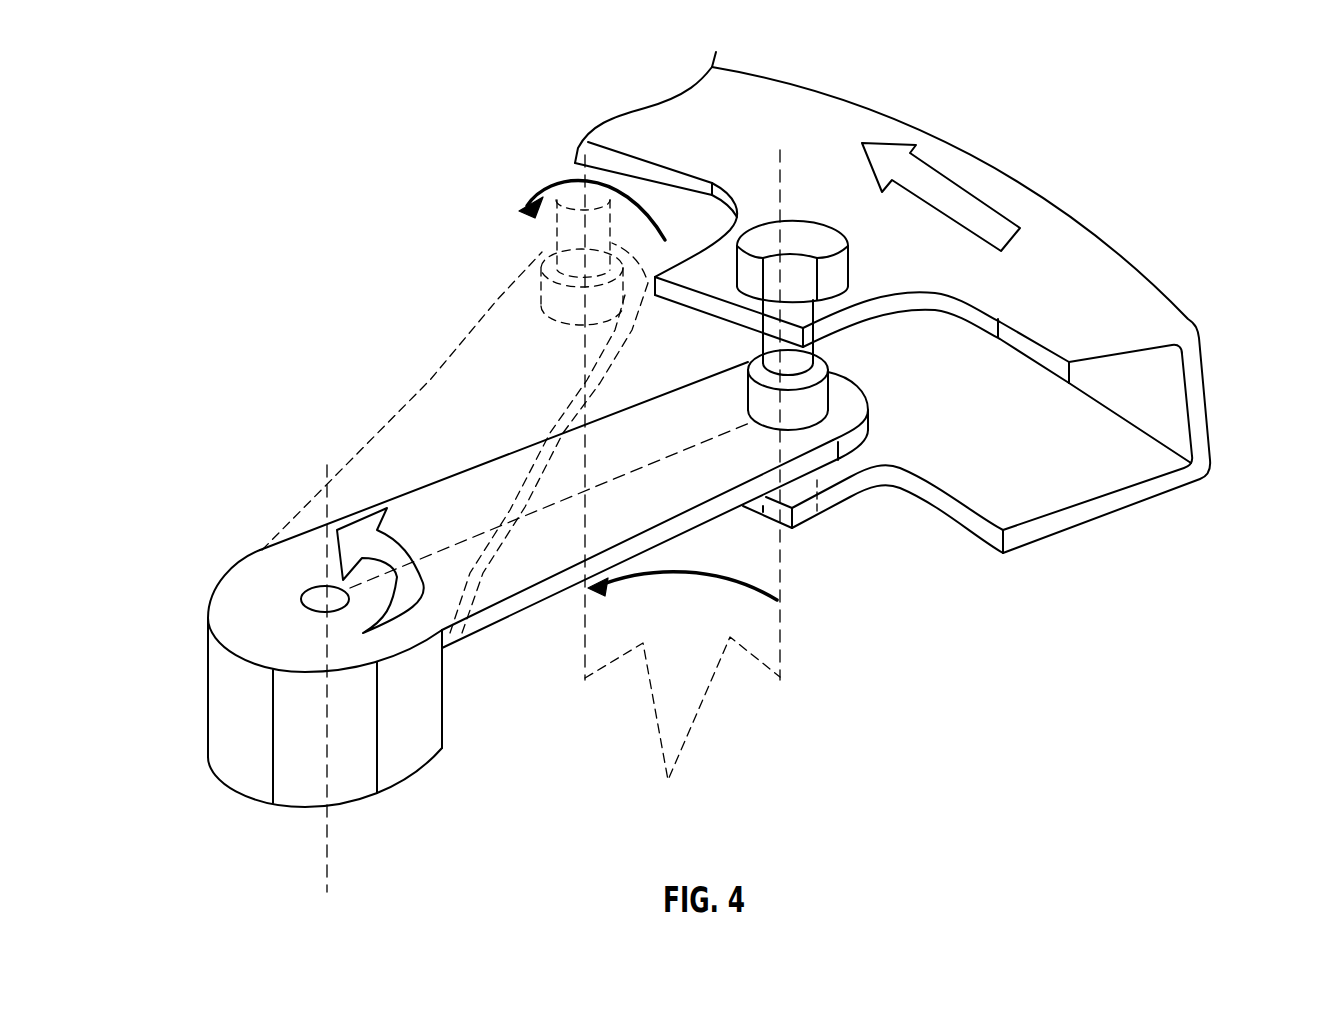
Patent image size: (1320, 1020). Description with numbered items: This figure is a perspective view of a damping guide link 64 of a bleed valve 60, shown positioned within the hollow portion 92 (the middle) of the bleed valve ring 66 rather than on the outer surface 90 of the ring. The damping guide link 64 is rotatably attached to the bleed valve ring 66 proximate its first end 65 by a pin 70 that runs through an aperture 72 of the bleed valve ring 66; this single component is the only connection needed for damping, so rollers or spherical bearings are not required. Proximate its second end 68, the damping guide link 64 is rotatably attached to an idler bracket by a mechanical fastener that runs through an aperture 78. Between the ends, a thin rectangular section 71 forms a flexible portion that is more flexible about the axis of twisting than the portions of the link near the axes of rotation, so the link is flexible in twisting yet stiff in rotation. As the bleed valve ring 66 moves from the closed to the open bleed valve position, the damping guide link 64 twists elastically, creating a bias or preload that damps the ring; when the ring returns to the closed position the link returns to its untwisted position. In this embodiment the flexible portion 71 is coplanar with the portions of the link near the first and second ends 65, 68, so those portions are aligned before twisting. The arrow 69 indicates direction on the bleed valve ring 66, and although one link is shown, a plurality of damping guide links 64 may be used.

The bleed valve 60 is at (576, 94).
The damping guide link 64 is at (481, 480).
The first end 65 is at (867, 427).
The bleed valve ring 66 is at (1020, 172).
The second end 68 is at (215, 687).
The direction arrow 69 is at (1013, 238).
The pin 70 is at (573, 198).
The thin rectangular section 71 is at (420, 503).
The aperture 72 is at (828, 302).
The aperture 78 is at (307, 590).
The outer surface 90 is at (1135, 282).
The hollow portion 92 is at (1127, 402).